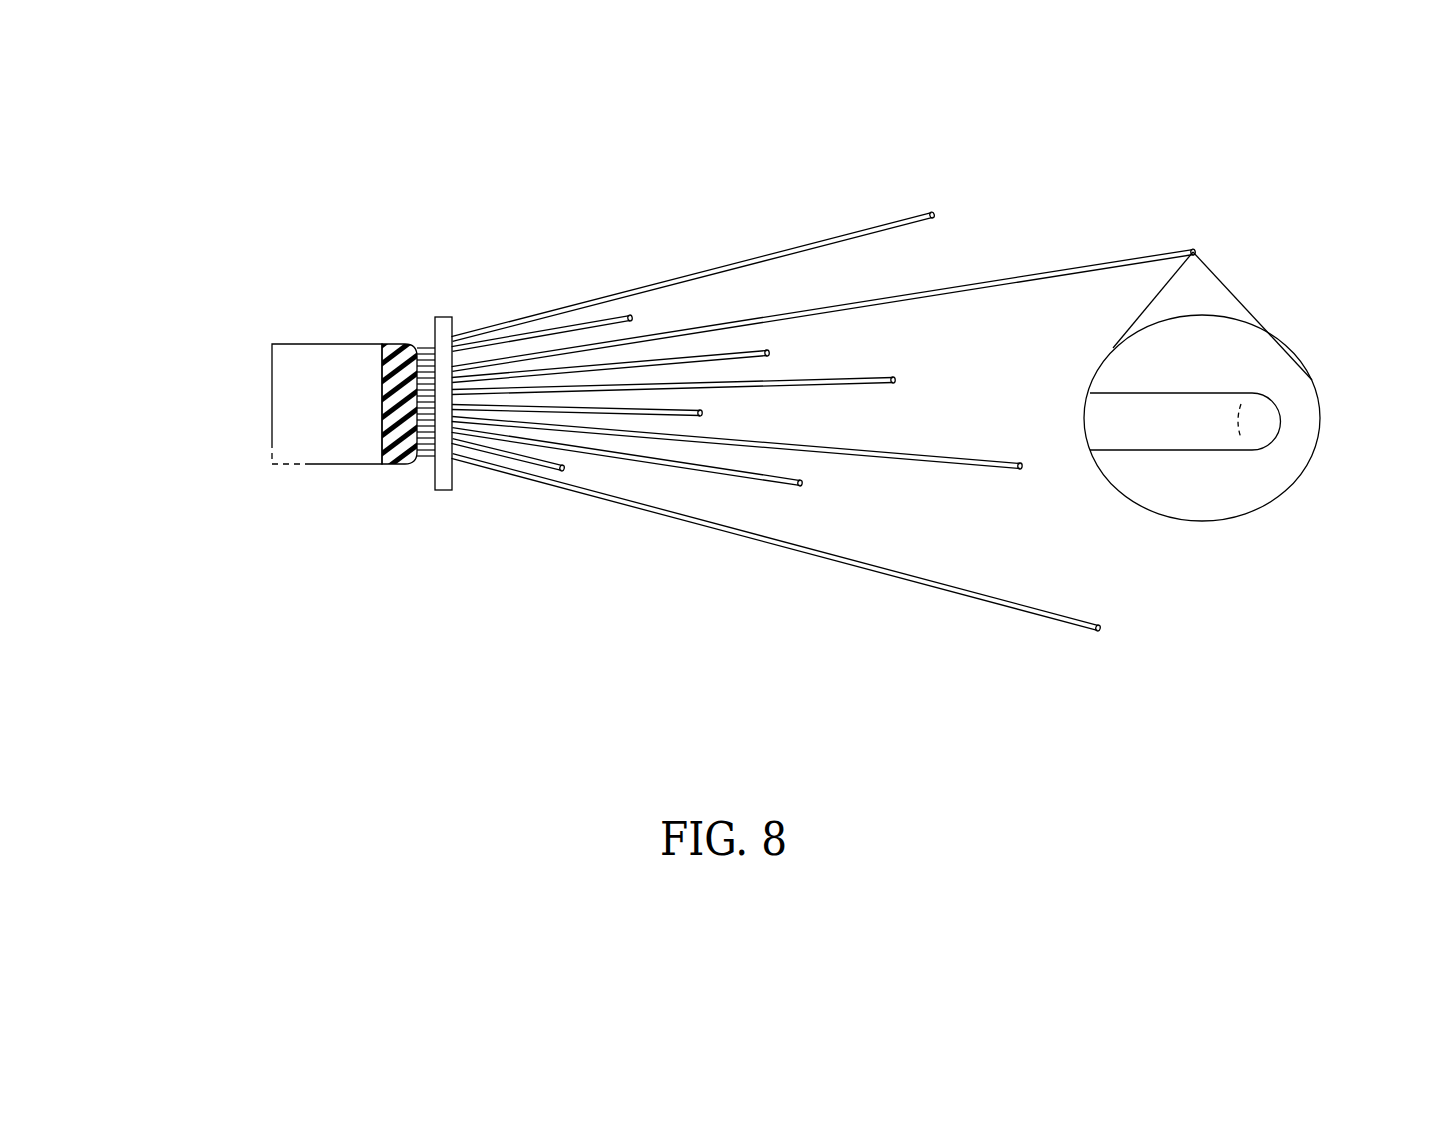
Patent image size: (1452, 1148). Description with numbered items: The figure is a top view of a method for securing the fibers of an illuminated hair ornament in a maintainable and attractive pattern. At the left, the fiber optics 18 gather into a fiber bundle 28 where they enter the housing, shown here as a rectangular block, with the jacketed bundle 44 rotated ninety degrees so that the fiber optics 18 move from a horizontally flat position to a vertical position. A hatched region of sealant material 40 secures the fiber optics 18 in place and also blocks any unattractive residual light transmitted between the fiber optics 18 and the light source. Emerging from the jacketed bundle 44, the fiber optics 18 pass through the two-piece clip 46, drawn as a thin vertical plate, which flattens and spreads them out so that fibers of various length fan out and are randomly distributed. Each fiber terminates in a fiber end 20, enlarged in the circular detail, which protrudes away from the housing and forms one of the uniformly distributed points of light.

The fiber optics 18 is at (890, 578).
The fiber ends 20 is at (1280, 435).
The fiber bundle 28 is at (303, 442).
The sealant material 40 is at (395, 467).
The jacketed bundle 44 is at (270, 383).
The two-piece clip 46 is at (440, 490).